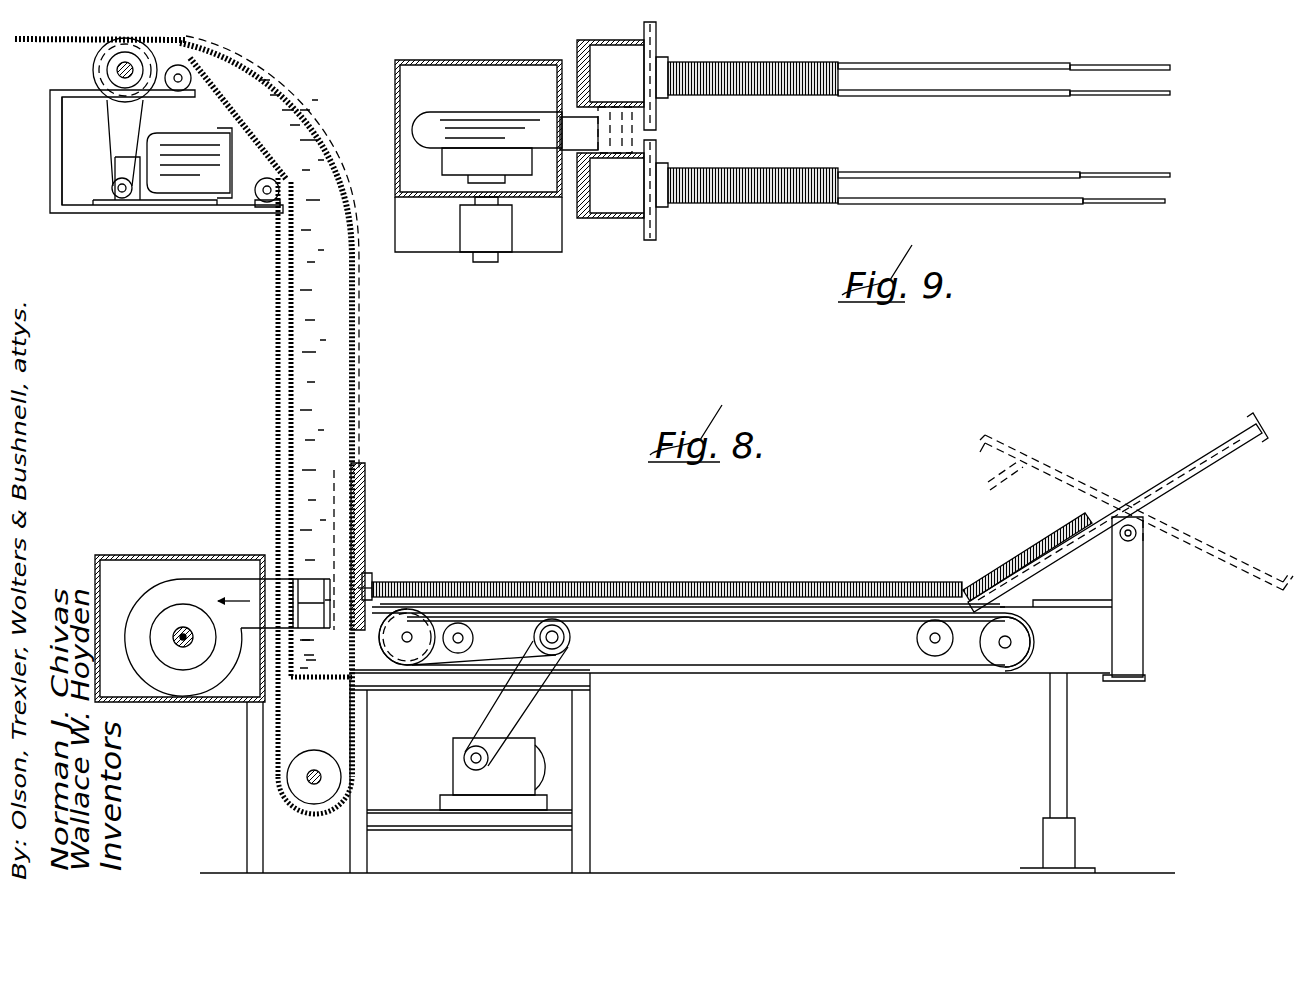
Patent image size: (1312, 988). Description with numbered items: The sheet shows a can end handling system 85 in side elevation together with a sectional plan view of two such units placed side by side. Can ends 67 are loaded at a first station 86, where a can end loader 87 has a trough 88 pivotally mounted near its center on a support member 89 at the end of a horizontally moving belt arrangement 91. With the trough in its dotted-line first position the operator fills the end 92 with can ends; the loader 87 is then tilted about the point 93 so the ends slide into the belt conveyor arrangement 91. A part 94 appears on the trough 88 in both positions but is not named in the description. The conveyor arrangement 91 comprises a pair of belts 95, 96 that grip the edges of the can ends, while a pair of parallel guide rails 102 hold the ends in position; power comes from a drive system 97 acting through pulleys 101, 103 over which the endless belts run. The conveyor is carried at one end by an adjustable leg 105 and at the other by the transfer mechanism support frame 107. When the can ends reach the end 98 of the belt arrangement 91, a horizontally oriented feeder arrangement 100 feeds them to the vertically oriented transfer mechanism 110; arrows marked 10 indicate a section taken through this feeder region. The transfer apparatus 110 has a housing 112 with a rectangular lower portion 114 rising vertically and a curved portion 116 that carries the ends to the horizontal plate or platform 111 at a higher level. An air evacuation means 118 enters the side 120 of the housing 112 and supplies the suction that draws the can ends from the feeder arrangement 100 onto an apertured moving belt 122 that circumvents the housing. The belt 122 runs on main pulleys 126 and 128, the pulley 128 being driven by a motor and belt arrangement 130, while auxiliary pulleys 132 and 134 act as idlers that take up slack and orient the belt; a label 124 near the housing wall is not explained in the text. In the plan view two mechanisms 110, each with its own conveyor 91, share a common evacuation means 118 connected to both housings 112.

In FIG. 8, the damper / gate 10 is at (315, 618).
In FIG. 8, the can ends 67 is at (360, 278).
In FIG. 9, the can ends 67 is at (845, 66).
In FIG. 8, the can end handling system 85 is at (880, 510).
In FIG. 8, the first station 86 is at (1180, 590).
In FIG. 8, the can end loader 87 is at (1165, 505).
In FIG. 8, the trough 88 is at (1238, 460).
In FIG. 8, the support member 89 is at (1130, 660).
In FIG. 8, the belt arrangement 91 is at (862, 627).
In FIG. 9, the belt arrangement 91 is at (1010, 62).
In FIG. 8, the end of trough 92 is at (1263, 430).
In FIG. 8, the pivot point 93 is at (1120, 540).
In FIG. 8, the hatched plate 94 is at (995, 575).
In FIG. 9, the belt 95 is at (1160, 93).
In FIG. 9, the belt 96 is at (1145, 67).
In FIG. 8, the drive system 97 is at (513, 778).
In FIG. 8, the end of belt arrangement 98 is at (395, 578).
In FIG. 8, the feeder arrangement 100 is at (380, 620).
In FIG. 8, the pulley 101 is at (1005, 665).
In FIG. 8, the guide rails 102 is at (837, 604).
In FIG. 8, the pulley 103 is at (420, 660).
In FIG. 8, the adjustable leg 105 is at (1078, 845).
In FIG. 8, the transfer mechanism support frame 107 is at (420, 862).
In FIG. 8, the transfer mechanism 110 is at (372, 460).
In FIG. 9, the transfer mechanism 110 is at (690, 58).
In FIG. 8, the horizontal plate or platform 111 is at (75, 45).
In FIG. 8, the housing 112 is at (326, 378).
In FIG. 9, the housing 112 is at (607, 62).
In FIG. 8, the lower portion 114 is at (308, 512).
In FIG. 8, the curved portion 116 is at (292, 108).
In FIG. 8, the air evacuation means 118 is at (135, 565).
In FIG. 9, the air evacuation means 118 is at (468, 72).
In FIG. 8, the side of housing 120 is at (310, 660).
In FIG. 8, the moving belt 122 is at (352, 306).
In FIG. 9, the moving belt 122 is at (658, 33).
In FIG. 8, the wall 124 is at (355, 420).
In FIG. 8, the main pulley 126 is at (313, 805).
In FIG. 8, the main pulley 128 is at (97, 76).
In FIG. 8, the motor and belt arrangement 130 is at (172, 197).
In FIG. 8, the auxiliary pulley 132 is at (182, 92).
In FIG. 8, the auxiliary pulley 134 is at (255, 200).